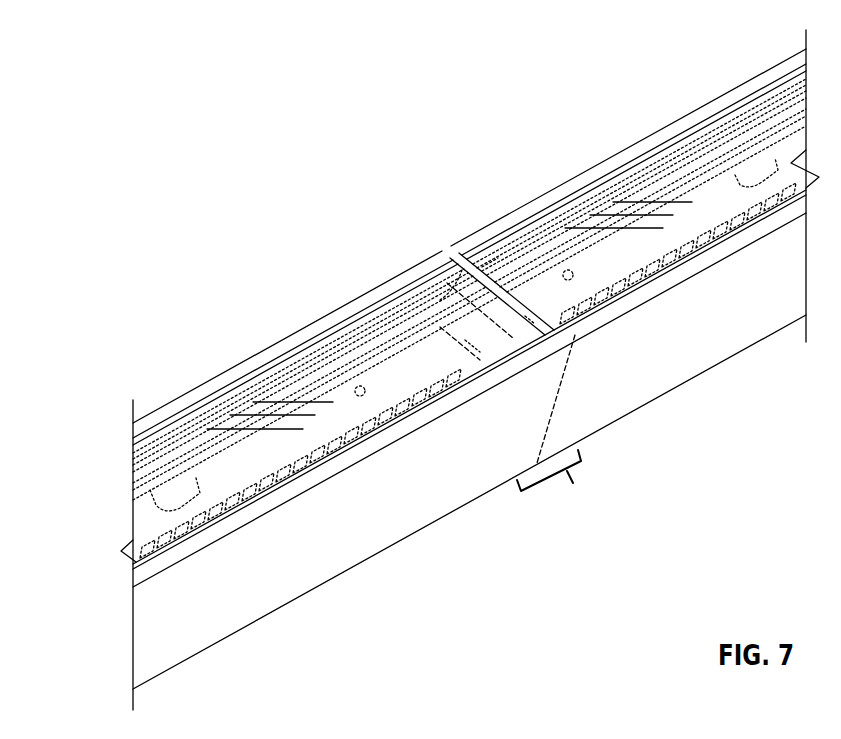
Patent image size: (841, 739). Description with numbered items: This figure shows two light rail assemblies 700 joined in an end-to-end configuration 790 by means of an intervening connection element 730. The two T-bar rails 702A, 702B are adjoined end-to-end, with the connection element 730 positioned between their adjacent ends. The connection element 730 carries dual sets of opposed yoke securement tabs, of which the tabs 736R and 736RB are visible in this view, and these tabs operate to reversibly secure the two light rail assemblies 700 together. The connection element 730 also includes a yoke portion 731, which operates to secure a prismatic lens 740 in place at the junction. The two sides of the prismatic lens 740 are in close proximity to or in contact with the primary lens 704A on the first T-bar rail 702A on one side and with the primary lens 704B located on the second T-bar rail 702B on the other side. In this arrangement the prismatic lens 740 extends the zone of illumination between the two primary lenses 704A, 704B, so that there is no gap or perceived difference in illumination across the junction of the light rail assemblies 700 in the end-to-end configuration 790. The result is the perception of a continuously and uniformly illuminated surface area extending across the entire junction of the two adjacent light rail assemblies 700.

The light rail assembly 700 is at (190, 152).
The first T-bar rail 702A is at (310, 330).
The second T-bar rail 702B is at (553, 193).
The primary lens 704A is at (253, 415).
The primary lens 704B is at (623, 213).
The connection element 730 is at (483, 282).
The yoke securement tab 736R is at (482, 267).
The yoke securement tab 736RB is at (440, 300).
The prismatic lens 740 is at (543, 318).
The yoke portion 731 is at (469, 354).
The end-to-end configuration 790 is at (568, 483).